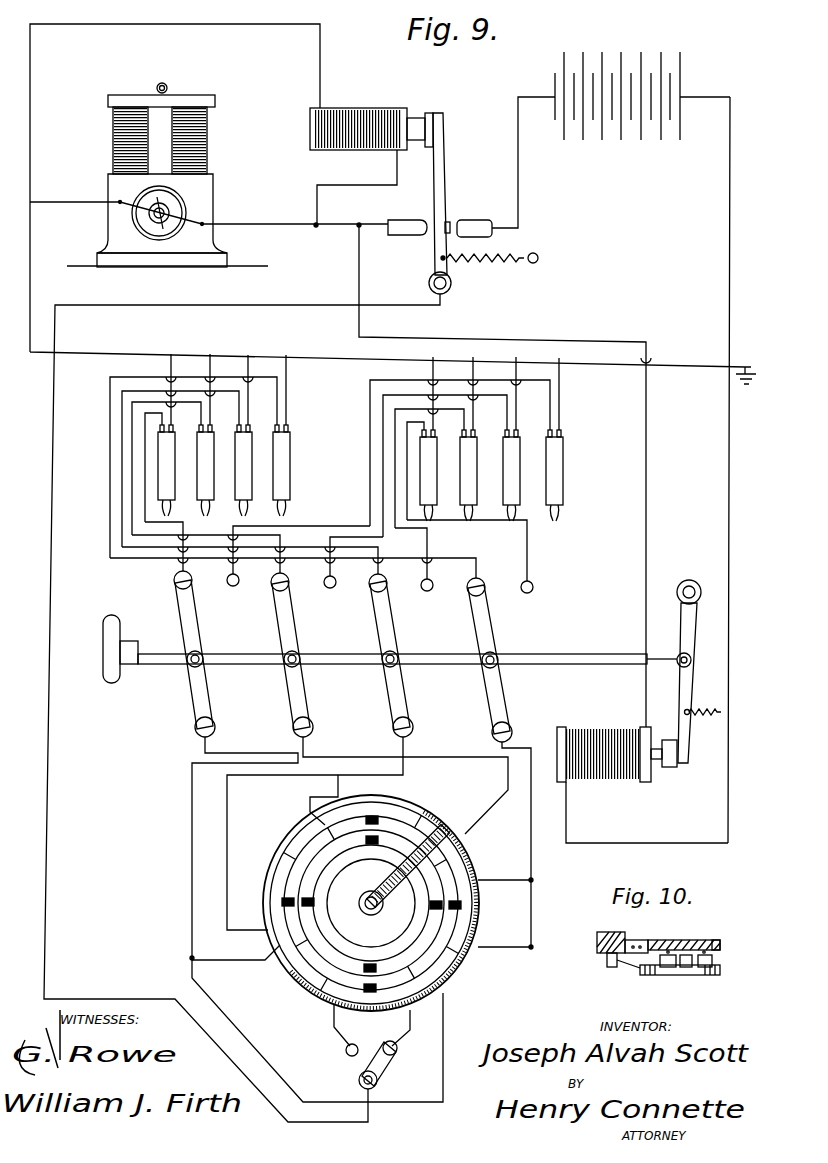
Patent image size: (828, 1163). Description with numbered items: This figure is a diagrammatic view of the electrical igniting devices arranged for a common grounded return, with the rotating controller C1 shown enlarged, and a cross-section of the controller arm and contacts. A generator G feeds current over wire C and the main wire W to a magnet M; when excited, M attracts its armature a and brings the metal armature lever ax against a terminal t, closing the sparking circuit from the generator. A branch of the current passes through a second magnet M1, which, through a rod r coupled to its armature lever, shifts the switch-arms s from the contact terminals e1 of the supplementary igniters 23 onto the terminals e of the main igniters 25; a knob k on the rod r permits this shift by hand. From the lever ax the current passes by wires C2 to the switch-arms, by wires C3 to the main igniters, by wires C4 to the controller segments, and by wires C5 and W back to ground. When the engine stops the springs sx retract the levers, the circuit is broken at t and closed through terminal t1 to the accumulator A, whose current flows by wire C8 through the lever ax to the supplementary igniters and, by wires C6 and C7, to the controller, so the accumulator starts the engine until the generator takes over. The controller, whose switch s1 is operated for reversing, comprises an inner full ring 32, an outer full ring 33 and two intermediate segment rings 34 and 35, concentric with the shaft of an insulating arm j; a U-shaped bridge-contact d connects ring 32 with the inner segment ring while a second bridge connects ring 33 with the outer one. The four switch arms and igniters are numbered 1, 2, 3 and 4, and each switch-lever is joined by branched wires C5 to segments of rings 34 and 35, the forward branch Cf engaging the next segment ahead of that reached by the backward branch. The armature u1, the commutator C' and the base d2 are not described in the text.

In FIG. 9, the main wire W is at (188, 36).
In FIG. 9, the generator G is at (167, 175).
In FIG. 9, the wire C is at (213, 439).
In FIG. 9, the magnet M is at (367, 114).
In FIG. 9, the armature a is at (431, 115).
In FIG. 9, the terminal t is at (408, 235).
In FIG. 9, the terminal t1 is at (474, 217).
In FIG. 9, the wire C8 is at (519, 186).
In FIG. 9, the accumulator A is at (616, 44).
In FIG. 9, the spring sx is at (581, 484).
In FIG. 9, the wires C2 is at (242, 305).
In FIG. 9, the rotating controller C1 is at (355, 278).
In FIG. 9, the wires C3 is at (208, 368).
In FIG. 9, the wires C4 is at (145, 518).
In FIG. 9, the main igniters 25 is at (225, 491).
In FIG. 9, the supplementary igniters 23 is at (489, 493).
In FIG. 9, the wires C6 is at (472, 375).
In FIG. 9, the wires C7 is at (395, 468).
In FIG. 9, the terminals e is at (173, 588).
In FIG. 9, the contact terminals e1 is at (227, 582).
In FIG. 9, the switch-arms s is at (202, 622).
In FIG. 9, the switch s1 is at (345, 1060).
In FIG. 9, the knob k is at (102, 650).
In FIG. 9, the rod r is at (450, 653).
In FIG. 9, the switch arm and igniter number one 1 is at (192, 733).
In FIG. 10, the switch arm and igniter number one 1 is at (597, 943).
In FIG. 9, the switch arm and igniter number two 2 is at (292, 733).
In FIG. 9, the switch arm and igniter number three 3 is at (393, 733).
In FIG. 9, the switch arm and igniter number four 4 is at (491, 731).
In FIG. 9, the branched wires C5 is at (375, 918).
In FIG. 9, the armature lever ax is at (442, 210).
In FIG. 9, the magnet M1 is at (606, 728).
In FIG. 9, the armature u1 is at (666, 770).
In FIG. 9, the commutator C' is at (371, 903).
In FIG. 10, the commutator C' is at (684, 931).
In FIG. 9, the inner full ring 32 is at (334, 903).
In FIG. 10, the inner full ring 32 is at (656, 967).
In FIG. 9, the outer full ring 33 is at (272, 862).
In FIG. 10, the outer full ring 33 is at (721, 970).
In FIG. 9, the segment ring 34 is at (404, 936).
In FIG. 10, the segment ring 34 is at (678, 975).
In FIG. 9, the segment ring 35 is at (300, 835).
In FIG. 10, the segment ring 35 is at (702, 975).
In FIG. 9, the forward branch wire Cf is at (457, 813).
In FIG. 10, the arm j is at (694, 940).
In FIG. 10, the base plate d2 is at (720, 952).
In FIG. 10, the bridge-contact d is at (620, 968).